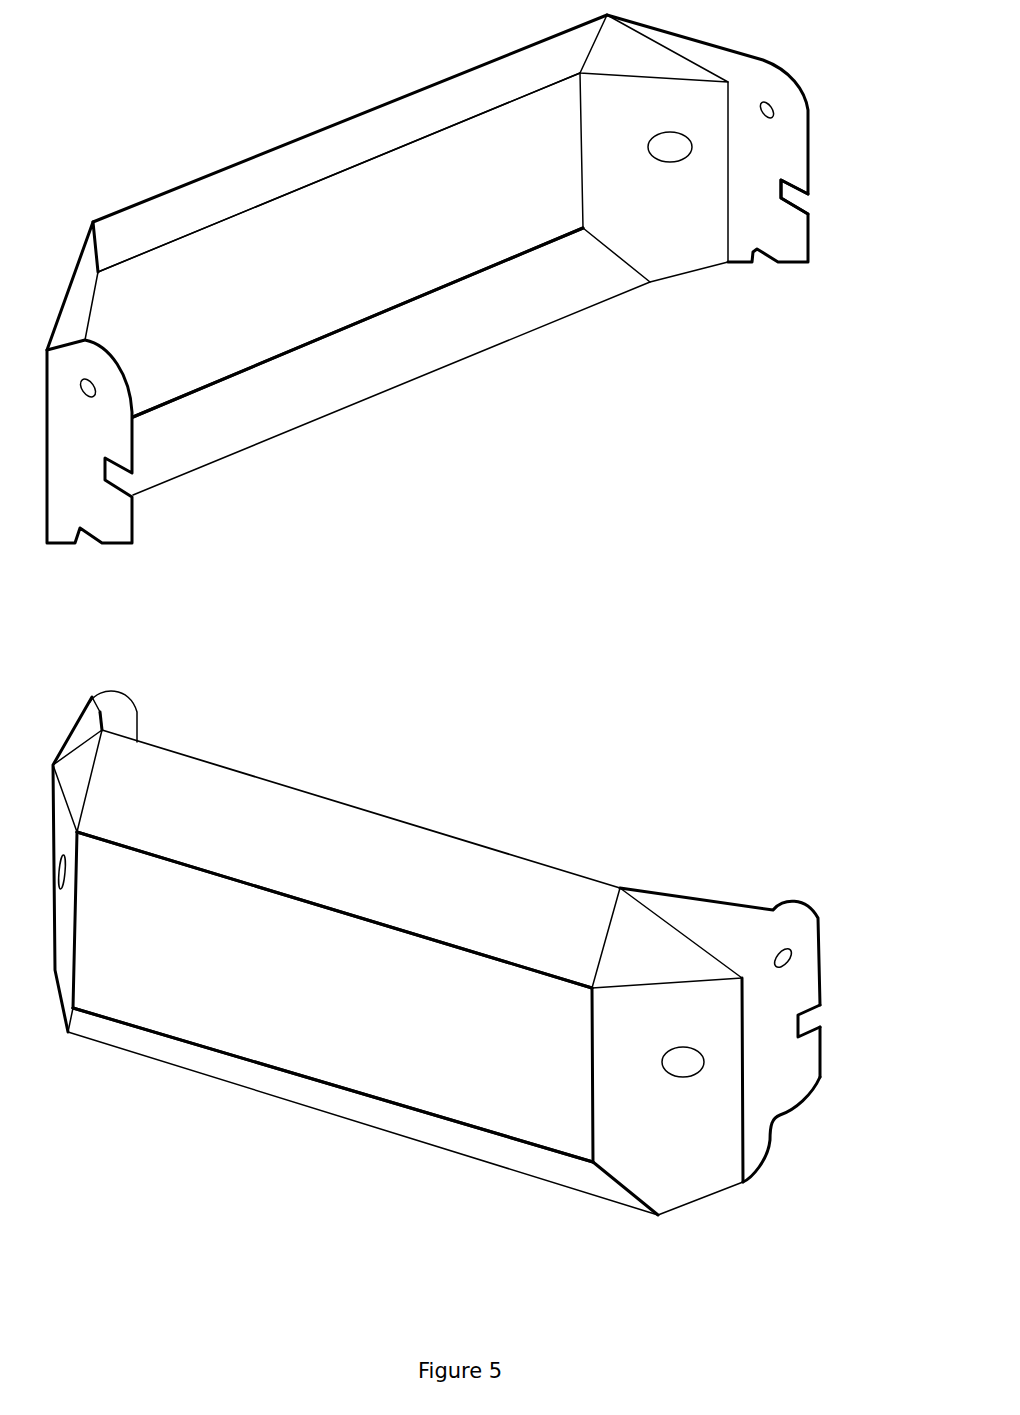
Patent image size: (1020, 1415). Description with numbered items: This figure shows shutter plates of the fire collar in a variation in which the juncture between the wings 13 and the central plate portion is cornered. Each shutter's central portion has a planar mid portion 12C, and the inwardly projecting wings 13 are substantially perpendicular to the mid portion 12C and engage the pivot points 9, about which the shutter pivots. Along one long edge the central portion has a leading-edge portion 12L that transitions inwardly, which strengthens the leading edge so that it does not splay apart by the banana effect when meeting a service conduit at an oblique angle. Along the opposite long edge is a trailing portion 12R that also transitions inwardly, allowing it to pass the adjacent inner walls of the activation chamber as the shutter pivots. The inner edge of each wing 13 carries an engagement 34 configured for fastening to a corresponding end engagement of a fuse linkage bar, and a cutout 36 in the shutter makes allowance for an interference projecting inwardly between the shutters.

The trailing portion 12R is at (348, 501).
The planar mid portion 12C is at (333, 617).
The leading-edge portion 12L is at (350, 1153).
The wing 13 is at (720, 986).
The engagement 34 is at (808, 203).
The pivot point 9 is at (793, 945).
The cutout 36 is at (778, 1128).